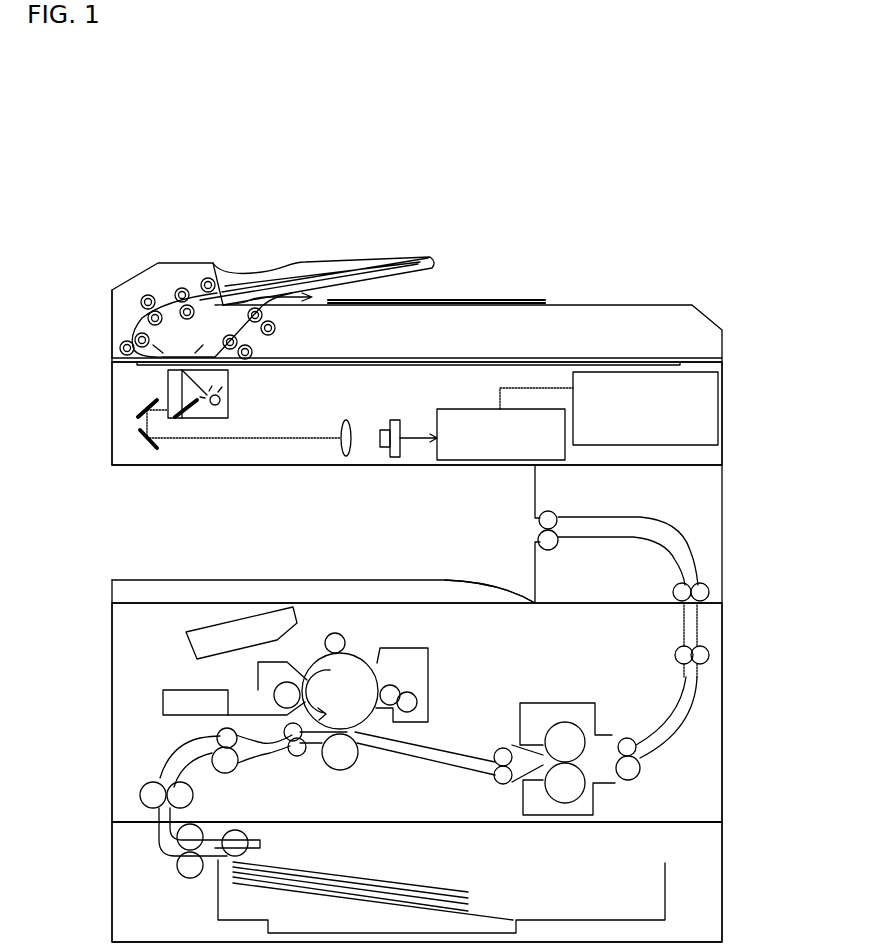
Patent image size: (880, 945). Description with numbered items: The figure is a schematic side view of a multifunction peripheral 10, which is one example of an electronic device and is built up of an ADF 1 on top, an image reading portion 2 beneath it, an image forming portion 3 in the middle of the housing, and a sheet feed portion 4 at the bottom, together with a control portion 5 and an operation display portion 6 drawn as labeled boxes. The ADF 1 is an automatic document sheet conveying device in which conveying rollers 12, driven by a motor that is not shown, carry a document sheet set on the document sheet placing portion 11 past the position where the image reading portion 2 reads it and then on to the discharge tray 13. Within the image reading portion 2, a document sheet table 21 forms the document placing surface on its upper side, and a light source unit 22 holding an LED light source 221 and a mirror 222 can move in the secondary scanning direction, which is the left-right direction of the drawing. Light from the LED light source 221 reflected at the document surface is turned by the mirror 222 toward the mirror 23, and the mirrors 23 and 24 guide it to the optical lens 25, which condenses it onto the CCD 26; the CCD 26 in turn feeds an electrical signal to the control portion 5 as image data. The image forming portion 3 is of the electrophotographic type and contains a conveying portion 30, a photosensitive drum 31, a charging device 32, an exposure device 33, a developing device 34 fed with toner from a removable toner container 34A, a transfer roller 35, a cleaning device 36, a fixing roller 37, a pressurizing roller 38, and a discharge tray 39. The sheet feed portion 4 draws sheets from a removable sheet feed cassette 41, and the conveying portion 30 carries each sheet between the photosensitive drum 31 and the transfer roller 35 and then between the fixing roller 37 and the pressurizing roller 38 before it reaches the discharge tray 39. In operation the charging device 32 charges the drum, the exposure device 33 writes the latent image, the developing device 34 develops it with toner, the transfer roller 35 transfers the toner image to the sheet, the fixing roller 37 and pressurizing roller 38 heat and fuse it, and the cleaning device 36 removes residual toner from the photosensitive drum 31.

The multifunction peripheral 10 is at (62, 250).
The ADF 1 is at (112, 312).
The document sheet placing portion 11 is at (285, 270).
The conveying rollers 12 is at (148, 295).
The discharge tray 13 is at (556, 300).
The image reading portion 2 is at (112, 428).
The document sheet table 21 is at (373, 365).
The light source unit 22 is at (230, 403).
The LED light source 221 is at (222, 394).
The mirror 222 is at (193, 411).
The mirror 23 is at (142, 405).
The mirror 24 is at (147, 445).
The optical lens 25 is at (346, 457).
The CCD 26 is at (396, 458).
The control portion 5 is at (461, 409).
The operation display portion 6 is at (722, 388).
The image forming portion 3 is at (131, 632).
The discharge tray 39 is at (463, 579).
The photosensitive drum 31 is at (368, 656).
The charging device 32 is at (325, 641).
The exposure device 33 is at (190, 647).
The developing device 34 is at (214, 705).
The toner container 34A is at (180, 718).
The transfer roller 35 is at (346, 770).
The cleaning device 36 is at (408, 648).
The fixing roller 37 is at (568, 774).
The pressurizing roller 38 is at (548, 790).
The conveying portion 30 is at (131, 773).
The sheet feed portion 4 is at (112, 888).
The sheet feed cassette 41 is at (665, 893).